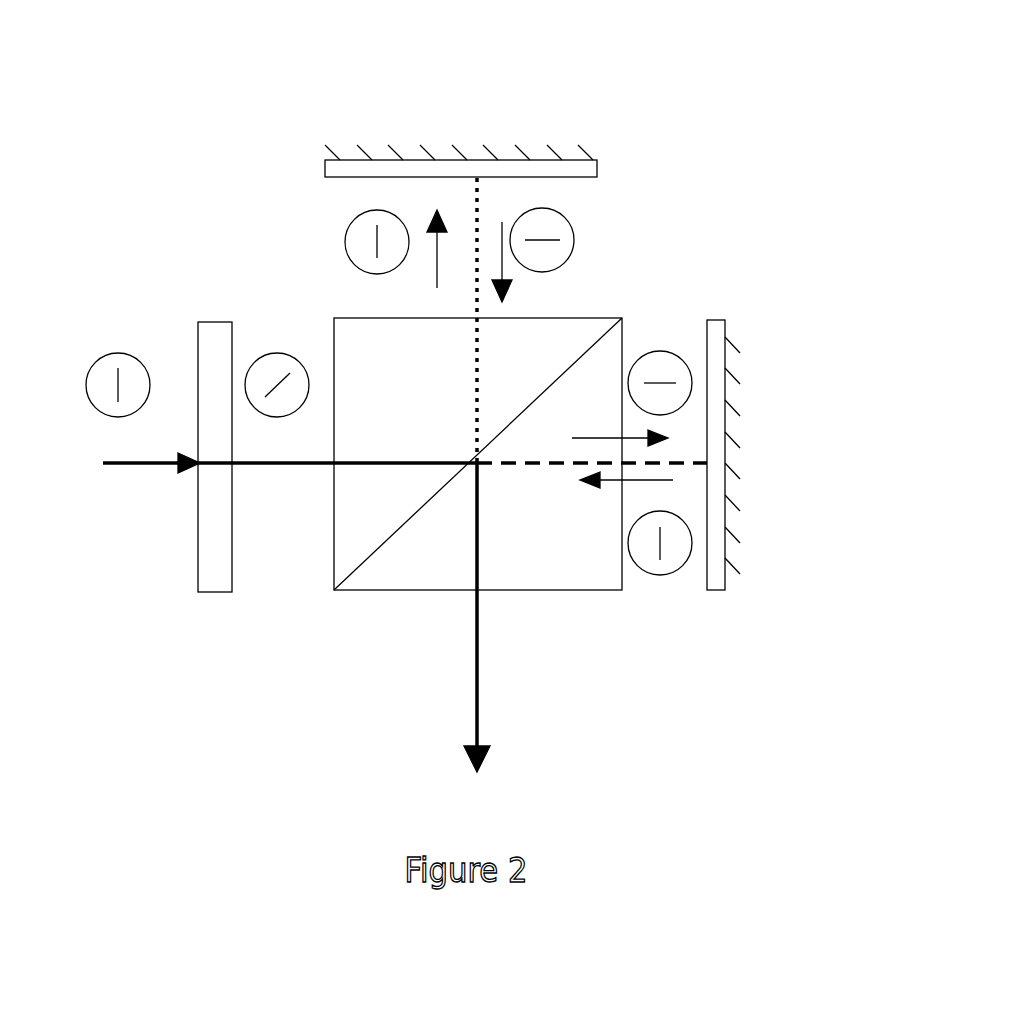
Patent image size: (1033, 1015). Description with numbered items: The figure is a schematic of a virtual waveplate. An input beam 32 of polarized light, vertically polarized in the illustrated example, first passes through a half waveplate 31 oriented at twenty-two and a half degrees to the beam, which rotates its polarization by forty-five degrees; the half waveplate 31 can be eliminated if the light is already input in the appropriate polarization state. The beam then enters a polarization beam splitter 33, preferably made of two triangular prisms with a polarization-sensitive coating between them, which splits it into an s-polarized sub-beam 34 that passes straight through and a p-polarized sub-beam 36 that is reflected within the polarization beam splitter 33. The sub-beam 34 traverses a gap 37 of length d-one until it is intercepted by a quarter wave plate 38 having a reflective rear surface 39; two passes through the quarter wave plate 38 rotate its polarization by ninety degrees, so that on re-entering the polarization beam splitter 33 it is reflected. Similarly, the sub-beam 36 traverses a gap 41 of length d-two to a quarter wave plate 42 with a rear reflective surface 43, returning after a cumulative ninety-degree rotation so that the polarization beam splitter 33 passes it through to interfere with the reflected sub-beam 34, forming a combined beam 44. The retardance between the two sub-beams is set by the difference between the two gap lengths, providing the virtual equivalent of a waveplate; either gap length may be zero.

The half waveplate 31 is at (198, 320).
The input beam 32 is at (115, 468).
The polarization beam splitter 33 is at (303, 598).
The s-polarized sub-beam 34 is at (500, 462).
The p-polarized sub-beam 36 is at (477, 342).
The gap 37 is at (668, 619).
The quarter wave plate 38 is at (717, 582).
The reflective rear surface 39 is at (758, 440).
The gap 41 is at (623, 229).
The quarter wave plate 42 is at (597, 177).
The rear reflective surface 43 is at (441, 144).
The combined beam 44 is at (453, 700).